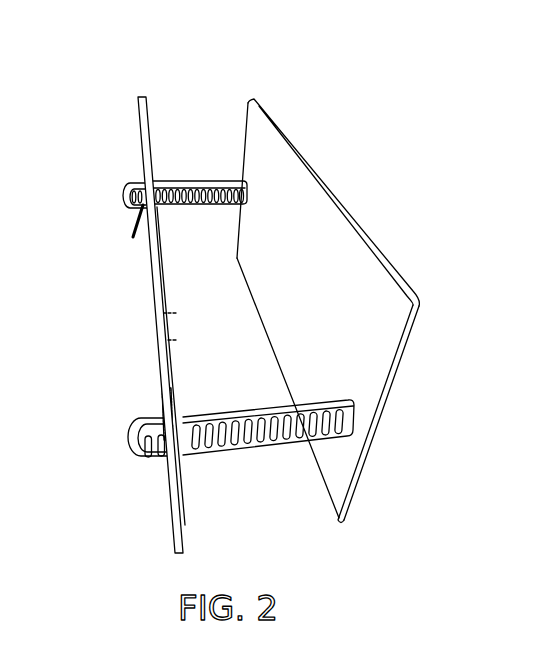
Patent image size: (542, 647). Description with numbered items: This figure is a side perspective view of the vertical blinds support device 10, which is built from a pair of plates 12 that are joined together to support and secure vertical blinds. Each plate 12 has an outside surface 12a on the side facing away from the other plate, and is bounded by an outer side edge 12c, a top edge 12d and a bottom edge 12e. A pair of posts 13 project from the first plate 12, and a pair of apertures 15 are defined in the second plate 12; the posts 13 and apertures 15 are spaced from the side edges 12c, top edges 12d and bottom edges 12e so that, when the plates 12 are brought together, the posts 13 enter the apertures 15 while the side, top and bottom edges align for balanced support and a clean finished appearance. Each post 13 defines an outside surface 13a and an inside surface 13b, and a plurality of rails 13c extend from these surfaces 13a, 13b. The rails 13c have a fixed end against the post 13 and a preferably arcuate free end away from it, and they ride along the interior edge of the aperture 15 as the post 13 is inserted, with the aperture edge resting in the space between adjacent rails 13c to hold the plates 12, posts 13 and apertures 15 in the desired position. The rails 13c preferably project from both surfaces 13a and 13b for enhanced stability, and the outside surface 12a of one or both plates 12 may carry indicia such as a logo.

The vertical blinds support device 10 is at (103, 80).
The plate 12 is at (335, 310).
The outside surface 12a is at (153, 317).
The outer side edge 12c is at (248, 103).
The top edge 12d is at (345, 207).
The bottom edge 12e is at (325, 498).
The post 13 is at (205, 321).
The outside surface 13a is at (232, 452).
The inside surface 13b is at (268, 452).
The rail 13c is at (216, 182).
The aperture 15 is at (150, 512).